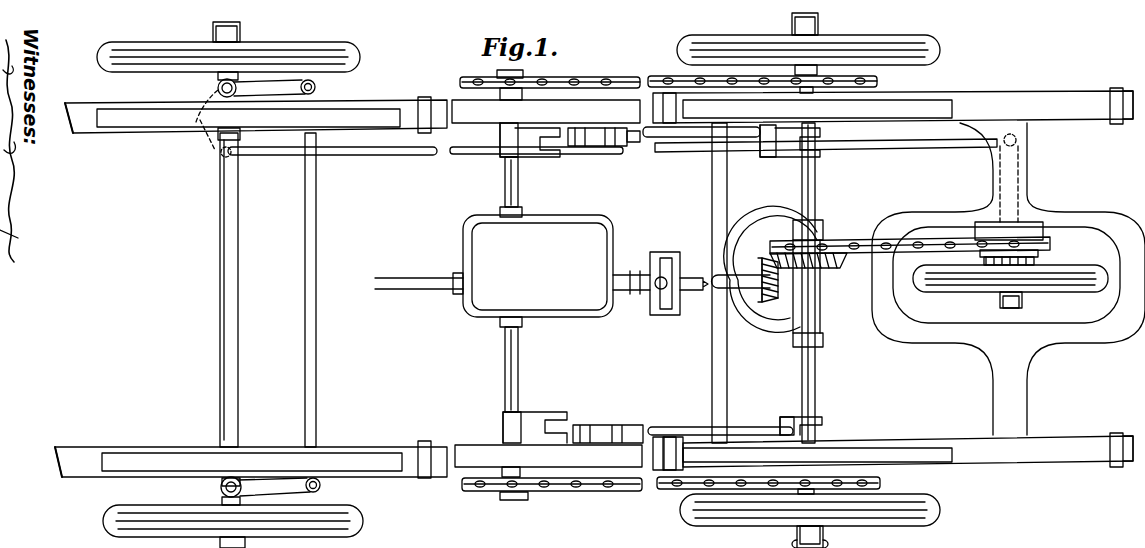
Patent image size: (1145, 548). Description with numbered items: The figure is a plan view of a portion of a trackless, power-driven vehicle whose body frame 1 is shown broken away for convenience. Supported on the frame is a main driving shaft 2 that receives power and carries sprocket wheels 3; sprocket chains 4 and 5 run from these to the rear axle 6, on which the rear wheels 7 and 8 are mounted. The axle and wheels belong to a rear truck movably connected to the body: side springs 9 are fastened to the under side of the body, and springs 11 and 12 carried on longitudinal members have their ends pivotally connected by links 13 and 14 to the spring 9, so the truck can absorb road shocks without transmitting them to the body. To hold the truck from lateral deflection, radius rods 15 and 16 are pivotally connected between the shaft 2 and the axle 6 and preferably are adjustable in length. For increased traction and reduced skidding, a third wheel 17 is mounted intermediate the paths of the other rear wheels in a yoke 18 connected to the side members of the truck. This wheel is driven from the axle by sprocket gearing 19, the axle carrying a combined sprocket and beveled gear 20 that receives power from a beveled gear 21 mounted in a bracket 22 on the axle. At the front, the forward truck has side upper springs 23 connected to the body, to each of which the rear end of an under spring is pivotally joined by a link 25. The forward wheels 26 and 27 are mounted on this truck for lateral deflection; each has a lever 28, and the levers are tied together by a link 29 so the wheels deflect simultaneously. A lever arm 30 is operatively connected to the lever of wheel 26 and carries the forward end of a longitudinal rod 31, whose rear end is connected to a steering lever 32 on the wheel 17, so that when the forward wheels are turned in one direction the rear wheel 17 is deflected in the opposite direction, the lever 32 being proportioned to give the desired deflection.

The body frame 1 is at (375, 108).
The main driving shaft 2 is at (507, 186).
The sprocket wheels 3 is at (497, 73).
The sprocket chain 4 is at (618, 491).
The sprocket chain 5 is at (608, 77).
The rear axle 6 is at (816, 176).
The rear wheel 7 is at (938, 48).
The rear wheel 8 is at (938, 502).
The side spring 9 is at (1056, 92).
The spring 11 is at (1130, 122).
The spring 12 is at (660, 468).
The link 13 is at (1116, 88).
The link 14 is at (668, 93).
The radius rod 15 is at (706, 152).
The radius rod 16 is at (668, 428).
The third wheel 17 is at (1065, 286).
The yoke 18 is at (1032, 344).
The sprocket gearing 19 is at (896, 242).
The combined sprocket and beveled gear 20 is at (845, 268).
The beveled gear 21 is at (770, 320).
The bracket 22 is at (798, 340).
The side upper spring 23 is at (77, 125).
The link 25 is at (425, 96).
The forward wheel 26 is at (346, 52).
The forward wheel 27 is at (364, 514).
The lever 28 is at (282, 80).
The link 29 is at (316, 226).
The lever arm 30 is at (213, 146).
The longitudinal rod 31 is at (400, 157).
The steering lever 32 is at (1020, 158).